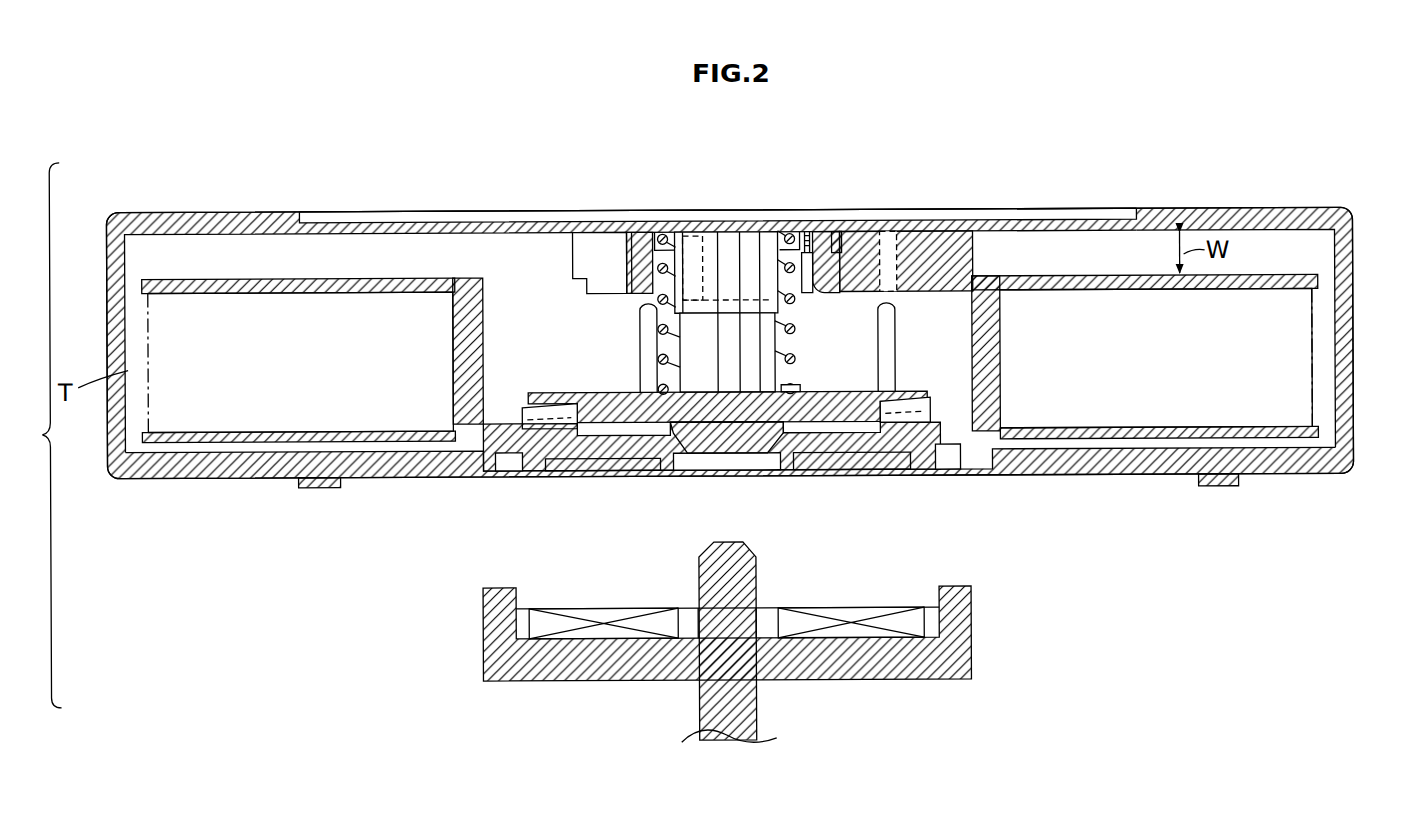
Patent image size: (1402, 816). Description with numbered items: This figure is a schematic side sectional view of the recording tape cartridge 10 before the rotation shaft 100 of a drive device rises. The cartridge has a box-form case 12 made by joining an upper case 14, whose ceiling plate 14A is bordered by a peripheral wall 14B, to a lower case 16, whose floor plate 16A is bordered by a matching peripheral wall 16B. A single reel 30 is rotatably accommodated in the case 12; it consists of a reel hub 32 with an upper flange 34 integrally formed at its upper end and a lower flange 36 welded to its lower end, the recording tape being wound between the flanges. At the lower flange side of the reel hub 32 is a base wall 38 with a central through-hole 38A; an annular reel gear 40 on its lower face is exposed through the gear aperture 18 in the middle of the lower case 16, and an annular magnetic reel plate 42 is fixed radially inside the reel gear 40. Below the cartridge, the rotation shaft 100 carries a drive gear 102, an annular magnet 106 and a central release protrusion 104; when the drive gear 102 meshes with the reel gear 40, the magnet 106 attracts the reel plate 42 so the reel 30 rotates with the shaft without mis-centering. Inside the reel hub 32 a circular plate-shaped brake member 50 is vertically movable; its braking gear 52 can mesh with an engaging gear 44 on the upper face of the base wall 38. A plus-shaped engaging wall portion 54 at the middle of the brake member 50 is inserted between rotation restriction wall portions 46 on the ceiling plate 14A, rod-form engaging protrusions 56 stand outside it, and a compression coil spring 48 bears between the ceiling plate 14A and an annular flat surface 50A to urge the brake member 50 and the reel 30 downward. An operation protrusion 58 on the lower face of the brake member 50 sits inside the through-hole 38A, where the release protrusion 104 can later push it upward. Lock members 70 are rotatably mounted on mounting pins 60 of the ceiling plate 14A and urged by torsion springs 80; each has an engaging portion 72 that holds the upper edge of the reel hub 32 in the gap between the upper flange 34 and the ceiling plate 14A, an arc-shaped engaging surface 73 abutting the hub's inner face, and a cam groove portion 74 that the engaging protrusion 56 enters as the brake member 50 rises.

The recording tape cartridge 10 is at (1180, 153).
The case 12 is at (1240, 208).
The upper case 14 is at (118, 214).
The ceiling plate 14A is at (272, 213).
The peripheral wall 14B is at (1345, 222).
The lower case 16 is at (117, 468).
The floor plate 16A is at (207, 482).
The peripheral wall 16B is at (1346, 466).
The gear aperture 18 is at (984, 476).
The reel 30 is at (205, 276).
The reel hub 32 is at (490, 312).
The upper flange 34 is at (332, 288).
The lower flange 36 is at (362, 443).
The base wall 38 is at (622, 458).
The through-hole 38A is at (770, 470).
The reel gear 40 is at (503, 458).
The reel plate 42 is at (578, 462).
The engaging gear 44 is at (527, 405).
The rotation restriction wall portions 46 is at (748, 248).
The compression coil spring 48 is at (796, 326).
The brake member 50 is at (610, 388).
The flat surface 50A is at (796, 384).
The braking gear 52 is at (566, 408).
The engaging wall portion 54 is at (698, 326).
The engaging protrusions 56 is at (896, 350).
The operation protrusion 58 is at (692, 456).
The mounting pin 60 is at (838, 300).
The lock member 70 is at (1002, 243).
The engaging portion 72 is at (1002, 296).
The engaging surface 73 is at (1000, 318).
The cam groove portion 74 is at (892, 286).
The torsion spring 80 is at (806, 262).
The rotation shaft 100 is at (760, 710).
The drive gear 102 is at (958, 594).
The release protrusion 104 is at (717, 543).
The magnet 106 is at (850, 608).